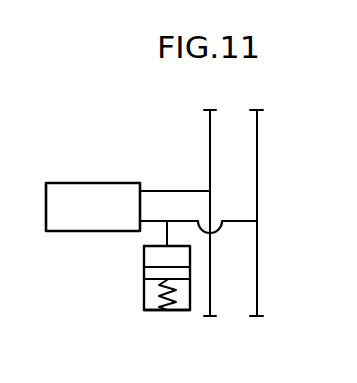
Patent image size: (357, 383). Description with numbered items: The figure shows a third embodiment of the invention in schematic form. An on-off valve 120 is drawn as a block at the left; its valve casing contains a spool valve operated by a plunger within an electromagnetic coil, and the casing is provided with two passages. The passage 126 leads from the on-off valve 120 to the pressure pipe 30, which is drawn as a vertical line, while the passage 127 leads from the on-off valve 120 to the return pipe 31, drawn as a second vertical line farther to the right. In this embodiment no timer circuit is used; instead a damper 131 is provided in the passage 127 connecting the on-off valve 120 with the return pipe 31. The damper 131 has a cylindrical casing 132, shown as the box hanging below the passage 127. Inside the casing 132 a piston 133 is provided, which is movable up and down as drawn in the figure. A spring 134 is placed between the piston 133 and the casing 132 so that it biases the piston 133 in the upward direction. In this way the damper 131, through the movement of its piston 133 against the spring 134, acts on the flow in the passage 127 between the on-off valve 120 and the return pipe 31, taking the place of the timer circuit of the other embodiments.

The on-off valve 120 is at (85, 189).
The passage 126 is at (163, 190).
The passage 127 is at (145, 224).
The pressure pipe 30 is at (209, 138).
The return pipe 31 is at (258, 147).
The damper 131 is at (143, 292).
The cylindrical casing 132 is at (157, 311).
The piston 133 is at (183, 274).
The spring 134 is at (172, 302).